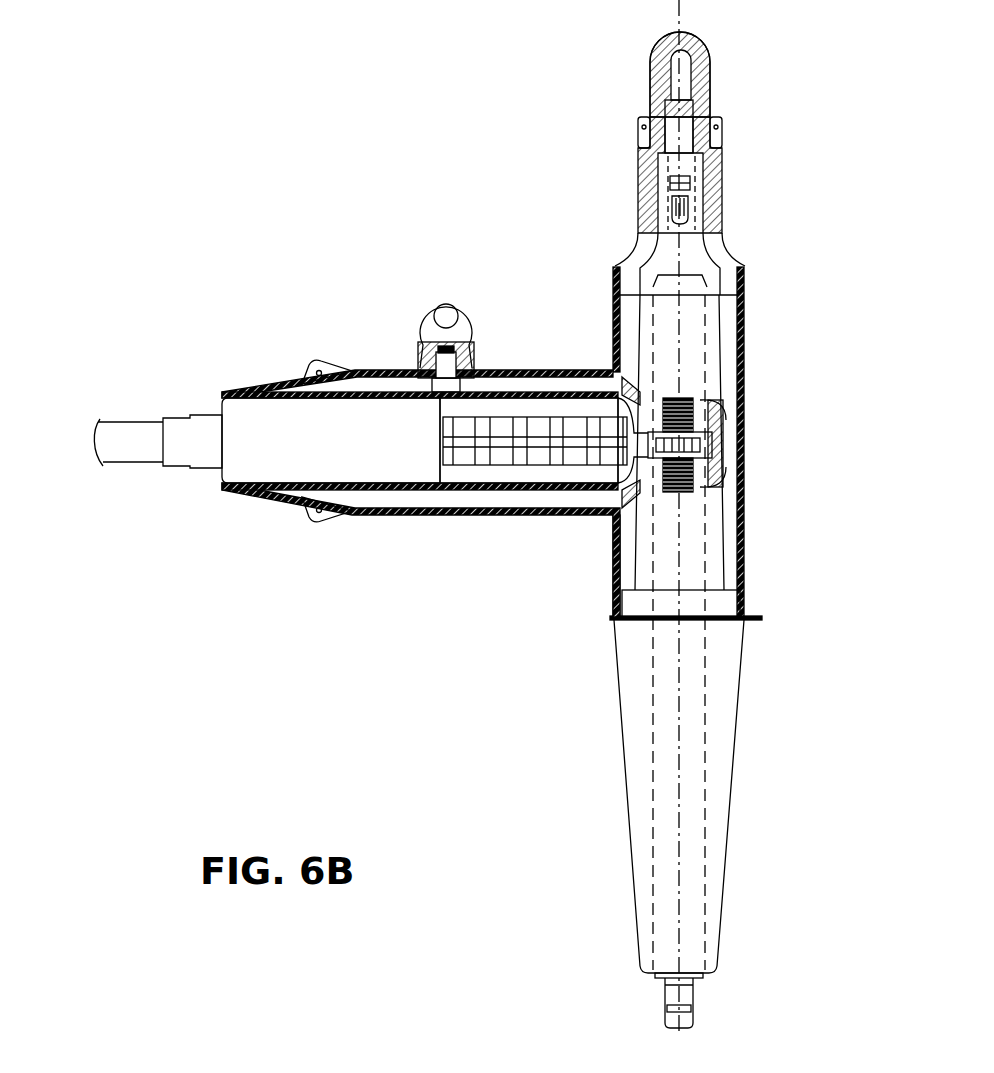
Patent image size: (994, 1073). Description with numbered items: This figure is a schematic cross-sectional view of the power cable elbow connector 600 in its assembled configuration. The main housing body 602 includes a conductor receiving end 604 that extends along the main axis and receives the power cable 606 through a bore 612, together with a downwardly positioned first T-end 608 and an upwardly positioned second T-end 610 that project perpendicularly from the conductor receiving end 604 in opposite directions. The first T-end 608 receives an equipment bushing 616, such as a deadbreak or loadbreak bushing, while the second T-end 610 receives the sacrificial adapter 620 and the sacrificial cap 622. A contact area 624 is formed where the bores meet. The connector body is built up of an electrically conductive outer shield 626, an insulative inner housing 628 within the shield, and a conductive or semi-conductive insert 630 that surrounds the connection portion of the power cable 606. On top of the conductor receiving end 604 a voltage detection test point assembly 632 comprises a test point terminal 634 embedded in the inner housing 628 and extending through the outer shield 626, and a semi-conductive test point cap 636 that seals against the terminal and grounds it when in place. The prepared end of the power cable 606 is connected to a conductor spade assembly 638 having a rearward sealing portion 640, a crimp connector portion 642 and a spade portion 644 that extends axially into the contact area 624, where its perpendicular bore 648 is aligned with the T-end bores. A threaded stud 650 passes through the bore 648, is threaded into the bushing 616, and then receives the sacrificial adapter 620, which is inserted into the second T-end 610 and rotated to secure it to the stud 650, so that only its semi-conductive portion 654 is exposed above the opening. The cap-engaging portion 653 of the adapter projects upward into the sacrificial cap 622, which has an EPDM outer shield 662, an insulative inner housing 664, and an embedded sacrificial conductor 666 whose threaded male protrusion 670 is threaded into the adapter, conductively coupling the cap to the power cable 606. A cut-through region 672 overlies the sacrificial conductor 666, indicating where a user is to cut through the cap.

The power cable elbow connector 600 is at (395, 193).
The main housing body 602 is at (316, 514).
The conductor receiving end 604 is at (283, 362).
The power cable 606 is at (148, 452).
The first T-end 608 is at (760, 568).
The second T-end 610 is at (762, 339).
The bore 612 is at (507, 480).
The equipment bushing 616 is at (695, 735).
The sacrificial adapter 620 is at (690, 333).
The sacrificial cap 622 is at (612, 121).
The contact area 624 is at (704, 427).
The outer shield 626 is at (403, 513).
The insulative inner housing 628 is at (573, 497).
The insert 630 is at (553, 392).
The voltage detection test point assembly 632 is at (416, 342).
The test point terminal 634 is at (433, 375).
The test point cap 636 is at (463, 310).
The conductor spade assembly 638 is at (462, 482).
The rearward sealing portion 640 is at (271, 474).
The crimp connector portion 642 is at (510, 437).
The spade portion 644 is at (708, 454).
The bore 648 is at (642, 440).
The threaded stud 650 is at (655, 447).
The cap-engaging portion 653 is at (663, 202).
The semi-conductive portion 654 is at (652, 258).
The outer shield 662 is at (657, 72).
The insulative inner housing 664 is at (700, 167).
The sacrificial conductor 666 is at (685, 125).
The threaded male protrusion 670 is at (685, 183).
The cut-through region 672 is at (712, 75).